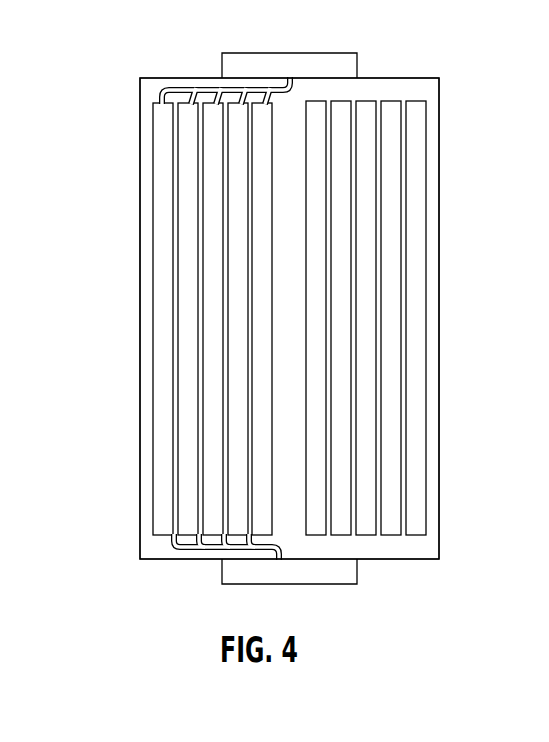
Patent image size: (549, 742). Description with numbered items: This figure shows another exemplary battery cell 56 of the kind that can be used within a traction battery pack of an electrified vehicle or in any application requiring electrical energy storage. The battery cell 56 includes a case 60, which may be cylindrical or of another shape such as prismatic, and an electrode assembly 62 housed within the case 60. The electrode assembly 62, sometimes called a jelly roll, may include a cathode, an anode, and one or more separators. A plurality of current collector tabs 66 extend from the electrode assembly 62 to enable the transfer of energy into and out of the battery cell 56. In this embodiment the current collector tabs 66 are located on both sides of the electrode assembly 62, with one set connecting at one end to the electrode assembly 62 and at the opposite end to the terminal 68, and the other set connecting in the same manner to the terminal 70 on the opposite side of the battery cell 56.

The battery cell 56 is at (95, 27).
The case 60 is at (140, 240).
The electrode assembly 62 is at (186, 497).
The current collector tabs 66 is at (190, 78).
The terminal 68 is at (283, 70).
The another terminal 70 is at (286, 567).